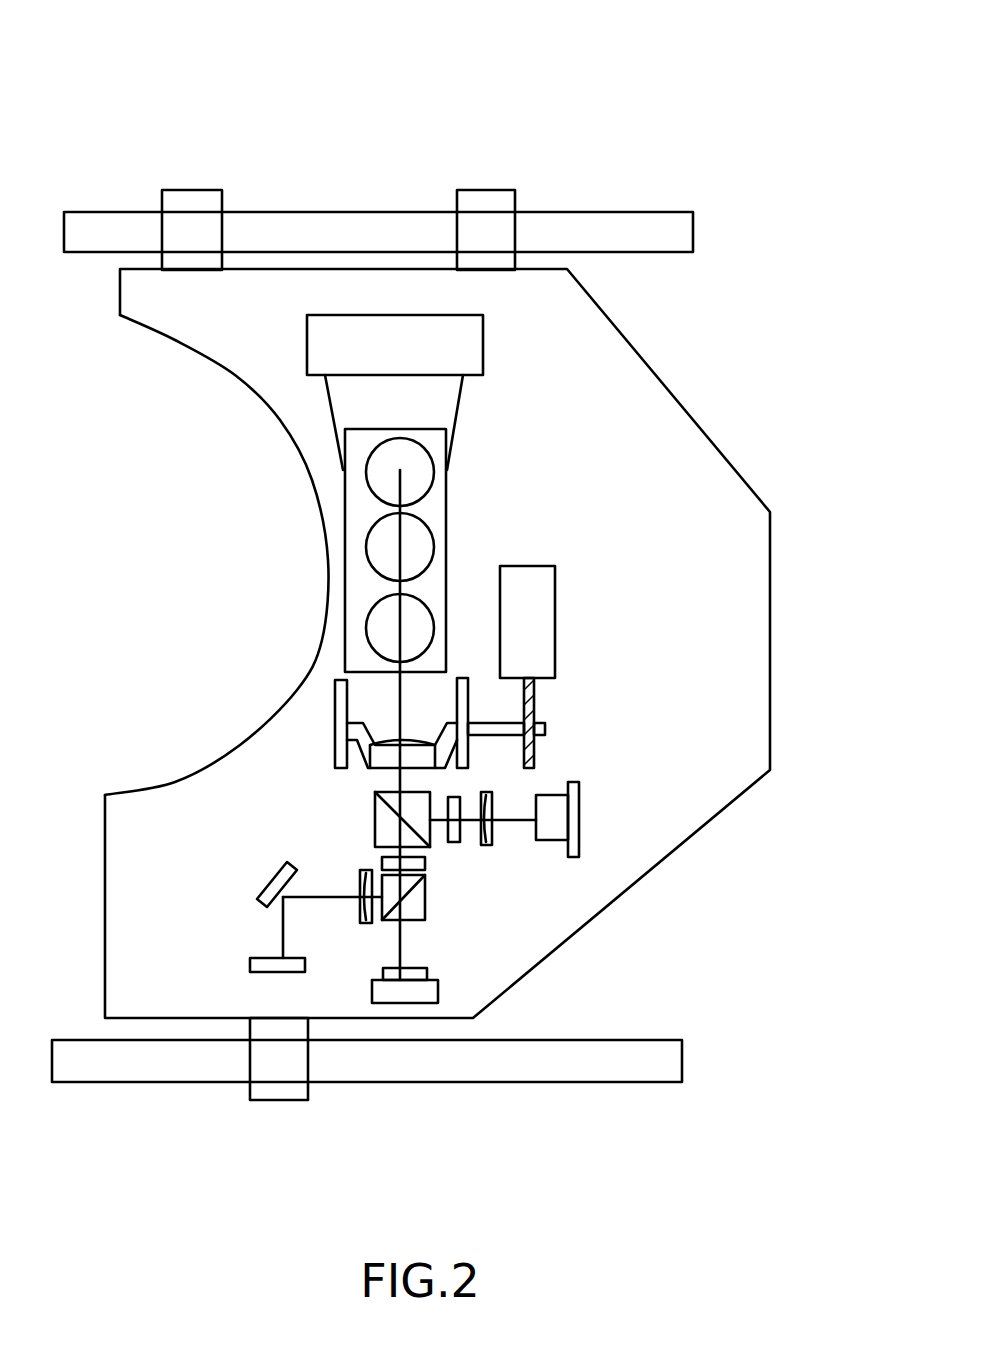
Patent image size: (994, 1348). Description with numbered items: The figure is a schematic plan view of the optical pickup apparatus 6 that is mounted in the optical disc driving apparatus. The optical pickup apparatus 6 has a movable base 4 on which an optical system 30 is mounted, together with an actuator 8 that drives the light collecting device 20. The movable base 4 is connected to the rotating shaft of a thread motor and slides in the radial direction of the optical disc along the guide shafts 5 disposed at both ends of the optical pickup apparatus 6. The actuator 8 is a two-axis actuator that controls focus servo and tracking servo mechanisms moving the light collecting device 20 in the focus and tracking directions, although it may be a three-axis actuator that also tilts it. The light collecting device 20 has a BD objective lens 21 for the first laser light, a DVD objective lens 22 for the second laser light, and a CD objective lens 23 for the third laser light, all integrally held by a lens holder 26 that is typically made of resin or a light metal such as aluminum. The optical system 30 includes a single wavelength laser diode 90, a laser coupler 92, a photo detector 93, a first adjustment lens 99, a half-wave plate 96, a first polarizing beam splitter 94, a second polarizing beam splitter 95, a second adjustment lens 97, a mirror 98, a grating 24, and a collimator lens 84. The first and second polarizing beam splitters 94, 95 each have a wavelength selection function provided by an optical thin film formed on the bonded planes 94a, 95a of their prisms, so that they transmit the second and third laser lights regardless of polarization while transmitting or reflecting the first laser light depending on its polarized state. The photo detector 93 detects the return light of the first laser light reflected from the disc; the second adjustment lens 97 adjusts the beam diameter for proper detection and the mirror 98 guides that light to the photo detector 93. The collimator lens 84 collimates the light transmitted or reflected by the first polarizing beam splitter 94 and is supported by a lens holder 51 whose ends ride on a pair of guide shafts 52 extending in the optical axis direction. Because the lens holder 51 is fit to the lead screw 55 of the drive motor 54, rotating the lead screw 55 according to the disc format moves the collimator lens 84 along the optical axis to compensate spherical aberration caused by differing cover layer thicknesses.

The optical pickup apparatus 6 is at (407, 78).
The guide shafts 5 is at (380, 227).
The movable base 4 is at (763, 560).
The actuator 8 is at (495, 333).
The light collecting device 20 is at (332, 598).
The BD objective lens 21 is at (377, 470).
The DVD objective lens 22 is at (377, 553).
The CD objective lens 23 is at (377, 630).
The lens holder 26 is at (363, 505).
The lens holder 51 is at (360, 740).
The guide shafts 52 is at (333, 678).
The collimator lens 84 is at (382, 767).
The drive motor 54 is at (543, 623).
The lead screw 55 is at (538, 740).
The optical system 30 is at (640, 777).
The first polarizing beam splitter 94 is at (376, 808).
The bonded plane 94a is at (376, 812).
The first adjustment lens 99 is at (492, 845).
The single wavelength laser diode 90 is at (580, 842).
The grating 24 is at (453, 842).
The λ/2 plate 96 is at (380, 865).
The second polarizing beam splitter 95 is at (425, 910).
The bonded plane 95a is at (387, 910).
The mirror 98 is at (258, 890).
The photo detector 93 is at (250, 965).
The second adjustment lens 97 is at (362, 922).
The laser coupler 92 is at (405, 997).